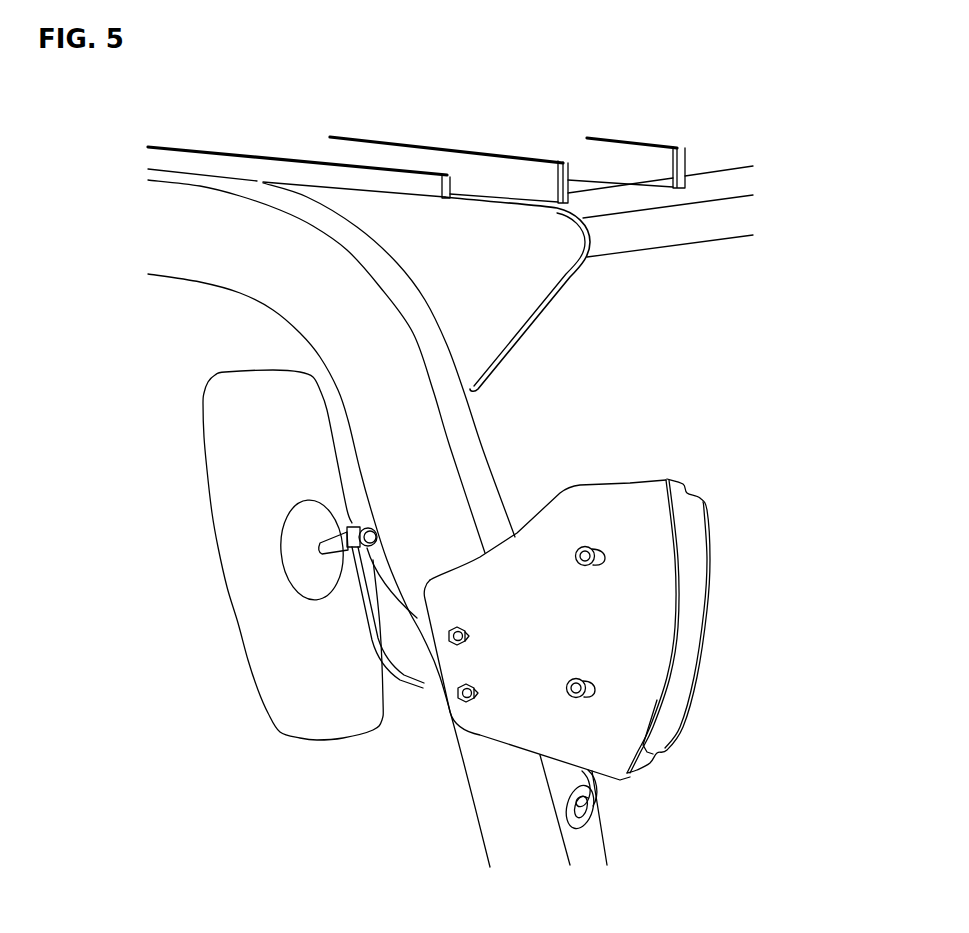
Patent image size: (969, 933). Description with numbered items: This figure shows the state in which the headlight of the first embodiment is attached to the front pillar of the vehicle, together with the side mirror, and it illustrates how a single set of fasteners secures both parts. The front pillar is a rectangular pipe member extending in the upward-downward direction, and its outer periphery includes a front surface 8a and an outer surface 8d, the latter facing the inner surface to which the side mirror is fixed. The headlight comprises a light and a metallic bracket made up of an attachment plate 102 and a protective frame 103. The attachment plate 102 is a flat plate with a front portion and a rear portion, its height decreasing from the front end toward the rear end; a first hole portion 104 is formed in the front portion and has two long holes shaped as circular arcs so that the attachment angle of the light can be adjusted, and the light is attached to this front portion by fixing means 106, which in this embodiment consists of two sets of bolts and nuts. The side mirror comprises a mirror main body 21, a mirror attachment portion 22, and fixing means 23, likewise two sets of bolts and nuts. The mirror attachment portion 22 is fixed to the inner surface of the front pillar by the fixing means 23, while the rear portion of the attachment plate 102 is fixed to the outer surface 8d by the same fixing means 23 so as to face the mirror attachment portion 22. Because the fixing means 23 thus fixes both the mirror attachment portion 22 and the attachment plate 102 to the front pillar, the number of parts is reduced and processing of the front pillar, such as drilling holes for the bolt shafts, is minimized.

The front surface 8a is at (485, 475).
The outer surface 8d is at (497, 815).
The mirror main body 21 is at (247, 545).
The mirror attachment portion 22 is at (390, 636).
The fixing means 23 is at (448, 636).
The attachment plate 102 is at (597, 503).
The protective frame 103 is at (690, 542).
The first hole portion 104 is at (605, 558).
The fixing means 106 is at (590, 563).